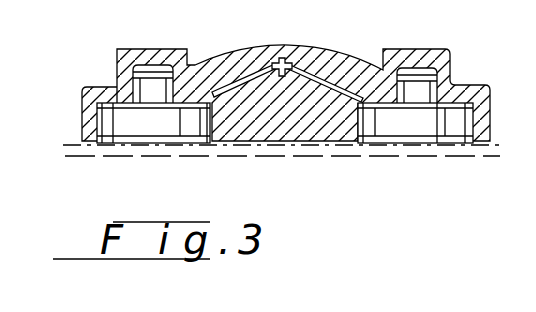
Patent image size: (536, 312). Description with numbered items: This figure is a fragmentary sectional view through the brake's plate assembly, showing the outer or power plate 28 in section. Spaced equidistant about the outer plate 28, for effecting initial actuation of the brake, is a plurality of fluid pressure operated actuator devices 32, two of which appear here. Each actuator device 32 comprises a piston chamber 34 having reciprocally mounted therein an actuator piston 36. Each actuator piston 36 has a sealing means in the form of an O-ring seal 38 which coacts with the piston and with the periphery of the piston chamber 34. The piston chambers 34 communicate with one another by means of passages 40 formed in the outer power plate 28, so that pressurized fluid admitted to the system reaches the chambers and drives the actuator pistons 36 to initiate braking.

The outer power plate 28 is at (322, 50).
The fluid pressure operated actuator device 32 is at (94, 72).
The piston chamber 34 is at (142, 80).
The actuator piston 36 is at (162, 127).
The O-ring seal 38 is at (115, 110).
The passage 40 is at (296, 63).